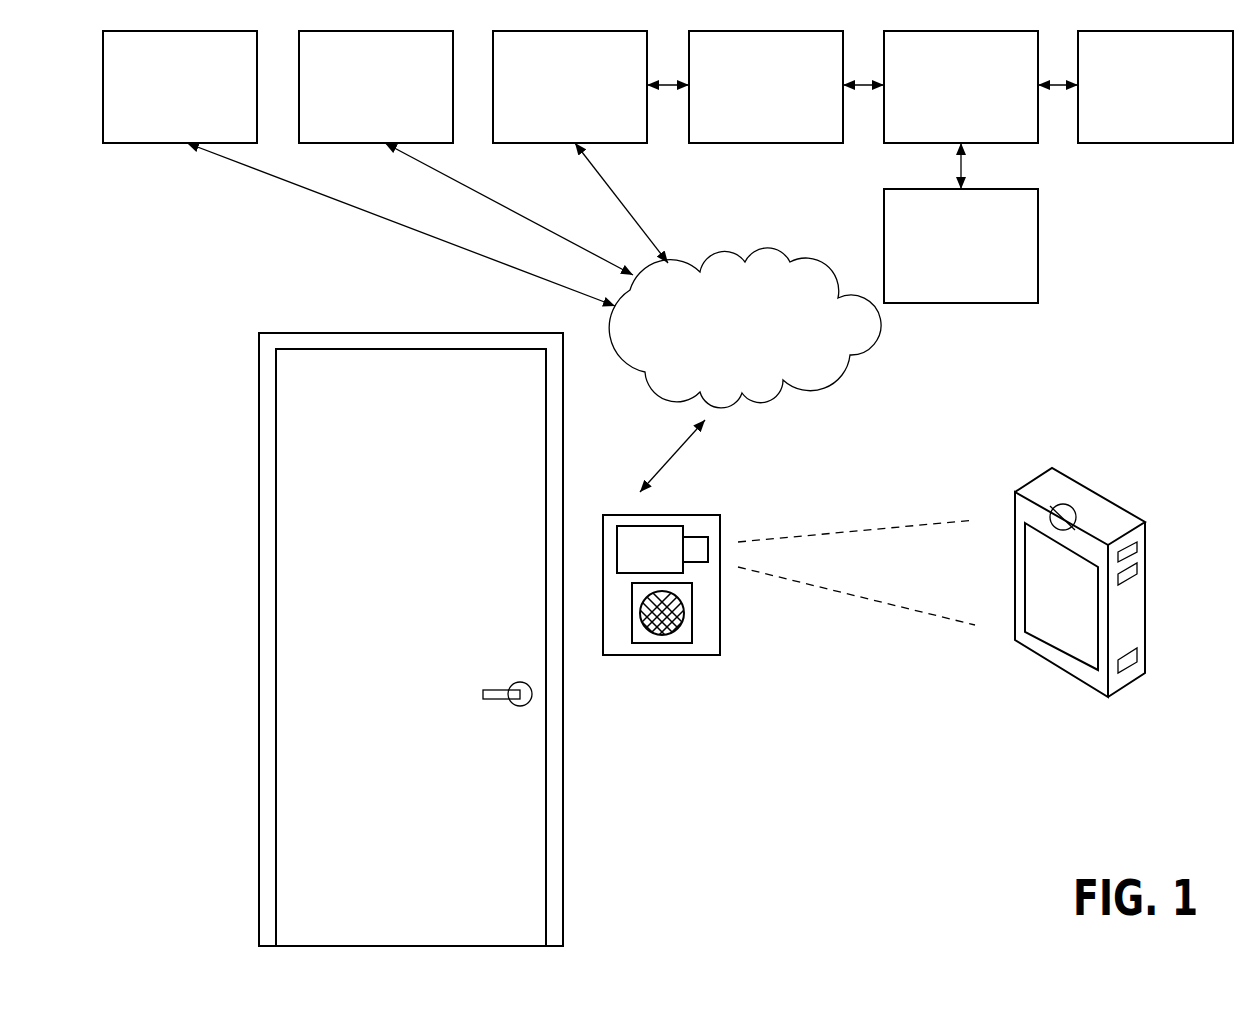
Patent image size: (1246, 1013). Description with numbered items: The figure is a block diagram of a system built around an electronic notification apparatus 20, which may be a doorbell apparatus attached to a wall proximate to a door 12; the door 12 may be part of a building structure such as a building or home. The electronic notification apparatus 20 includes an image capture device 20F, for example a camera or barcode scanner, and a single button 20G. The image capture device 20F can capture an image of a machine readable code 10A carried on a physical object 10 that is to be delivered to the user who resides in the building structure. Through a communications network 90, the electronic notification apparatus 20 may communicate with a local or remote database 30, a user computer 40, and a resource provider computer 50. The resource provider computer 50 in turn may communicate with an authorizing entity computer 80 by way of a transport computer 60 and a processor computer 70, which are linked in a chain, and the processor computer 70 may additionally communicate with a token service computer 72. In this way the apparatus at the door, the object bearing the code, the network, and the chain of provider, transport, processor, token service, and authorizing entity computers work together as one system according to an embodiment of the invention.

The physical object 10 is at (1090, 502).
The machine readable code 10A is at (1059, 622).
The door 12 is at (240, 380).
The electronic notification apparatus 20 is at (625, 657).
The image capture device 20F is at (679, 526).
The single button 20G is at (692, 631).
The local or remote database 30 is at (169, 135).
The user computer 40 is at (365, 122).
The resource provider computer 50 is at (559, 135).
The transport computer 60 is at (755, 122).
The processor computer 70 is at (950, 122).
The token service computer 72 is at (950, 293).
The authorizing entity computer 80 is at (1144, 135).
The communications network 90 is at (732, 371).